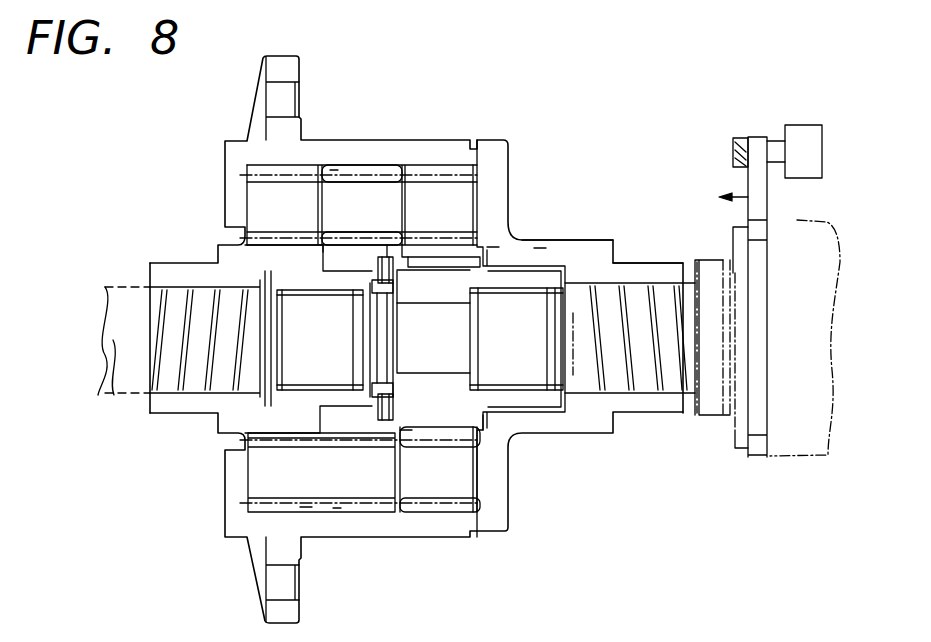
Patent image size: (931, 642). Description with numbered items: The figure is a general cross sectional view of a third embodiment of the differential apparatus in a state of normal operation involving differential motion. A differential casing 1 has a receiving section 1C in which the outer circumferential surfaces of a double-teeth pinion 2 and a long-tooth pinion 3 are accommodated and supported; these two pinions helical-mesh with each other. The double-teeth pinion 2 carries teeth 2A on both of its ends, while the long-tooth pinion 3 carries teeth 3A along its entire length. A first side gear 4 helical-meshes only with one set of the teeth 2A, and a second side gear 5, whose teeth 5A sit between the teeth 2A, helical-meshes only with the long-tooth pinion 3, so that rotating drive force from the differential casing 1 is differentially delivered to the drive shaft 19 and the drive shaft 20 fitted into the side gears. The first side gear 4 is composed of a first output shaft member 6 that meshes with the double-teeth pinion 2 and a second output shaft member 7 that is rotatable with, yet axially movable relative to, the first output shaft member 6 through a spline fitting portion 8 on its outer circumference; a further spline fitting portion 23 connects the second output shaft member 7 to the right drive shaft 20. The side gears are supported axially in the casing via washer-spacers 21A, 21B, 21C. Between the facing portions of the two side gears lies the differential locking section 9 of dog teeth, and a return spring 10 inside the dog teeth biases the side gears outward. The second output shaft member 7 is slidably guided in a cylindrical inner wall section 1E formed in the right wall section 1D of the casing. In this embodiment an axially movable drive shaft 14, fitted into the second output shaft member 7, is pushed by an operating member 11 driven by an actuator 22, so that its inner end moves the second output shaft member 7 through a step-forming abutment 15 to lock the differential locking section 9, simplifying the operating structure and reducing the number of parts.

The differential casing 1 is at (455, 125).
The receiving section 1C is at (337, 170).
The right wall section 1D is at (543, 244).
The cylindrical inner wall section 1E is at (585, 273).
The double-teeth pinion 2 is at (395, 190).
The teeth 2A is at (262, 168).
The long-tooth pinion 3 is at (370, 483).
The teeth 3A is at (307, 507).
The first side gear 4 is at (498, 243).
The second side gear 5 is at (335, 275).
The teeth 5A is at (355, 249).
The first output shaft member 6 is at (428, 262).
The second output shaft member 7 is at (448, 290).
The spline fitting portion 8 is at (433, 270).
The differential locking section 9 is at (385, 243).
The return spring 10 is at (397, 388).
The operating member 11 is at (760, 205).
The drive shaft 14 is at (517, 392).
The abutment 15 is at (540, 248).
The drive shaft 19 is at (133, 285).
The drive shaft 20 is at (712, 258).
The washer-spacer 21A is at (327, 250).
The washer-spacer 21B is at (407, 430).
The washer-spacer 21C is at (483, 423).
The actuator 22 is at (802, 128).
The spline fitting portion 23 is at (535, 380).